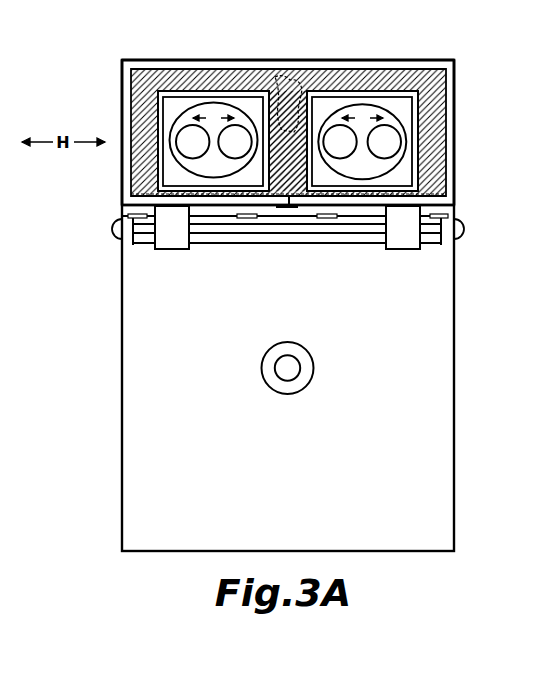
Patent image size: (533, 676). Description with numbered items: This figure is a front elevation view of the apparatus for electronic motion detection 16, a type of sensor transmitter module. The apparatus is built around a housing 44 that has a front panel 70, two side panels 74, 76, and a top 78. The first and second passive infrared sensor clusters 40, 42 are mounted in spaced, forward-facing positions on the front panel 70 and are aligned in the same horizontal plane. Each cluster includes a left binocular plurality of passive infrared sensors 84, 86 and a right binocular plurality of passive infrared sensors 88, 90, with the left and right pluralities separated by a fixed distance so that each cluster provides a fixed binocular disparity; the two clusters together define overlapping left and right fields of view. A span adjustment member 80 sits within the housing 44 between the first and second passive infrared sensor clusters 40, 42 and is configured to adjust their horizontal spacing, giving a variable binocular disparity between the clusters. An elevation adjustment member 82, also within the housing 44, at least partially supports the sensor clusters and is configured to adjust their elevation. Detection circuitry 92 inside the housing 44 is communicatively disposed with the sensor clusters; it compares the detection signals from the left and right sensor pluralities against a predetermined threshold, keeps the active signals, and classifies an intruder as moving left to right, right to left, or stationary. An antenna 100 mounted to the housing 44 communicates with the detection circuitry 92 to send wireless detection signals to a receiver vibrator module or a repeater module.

The apparatus for electronic motion detection 16 is at (108, 89).
The first passive infrared sensor cluster 40 is at (213, 151).
The second passive infrared sensor cluster 42 is at (362, 151).
The housing 44 is at (455, 60).
The front panel 70 is at (455, 127).
The side panel 74 is at (121, 190).
The side panel 76 is at (455, 190).
The top 78 is at (320, 60).
The span adjustment member 80 is at (289, 209).
The elevation adjustment member 82 is at (143, 248).
The left binocular plurality of passive infrared sensors 84 is at (182, 123).
The left binocular plurality of passive infrared sensors 86 is at (332, 122).
The right binocular plurality of passive infrared sensors 88 is at (243, 122).
The right binocular plurality of passive infrared sensors 90 is at (396, 122).
The detection circuitry 92 is at (290, 108).
The antenna 100 is at (262, 72).